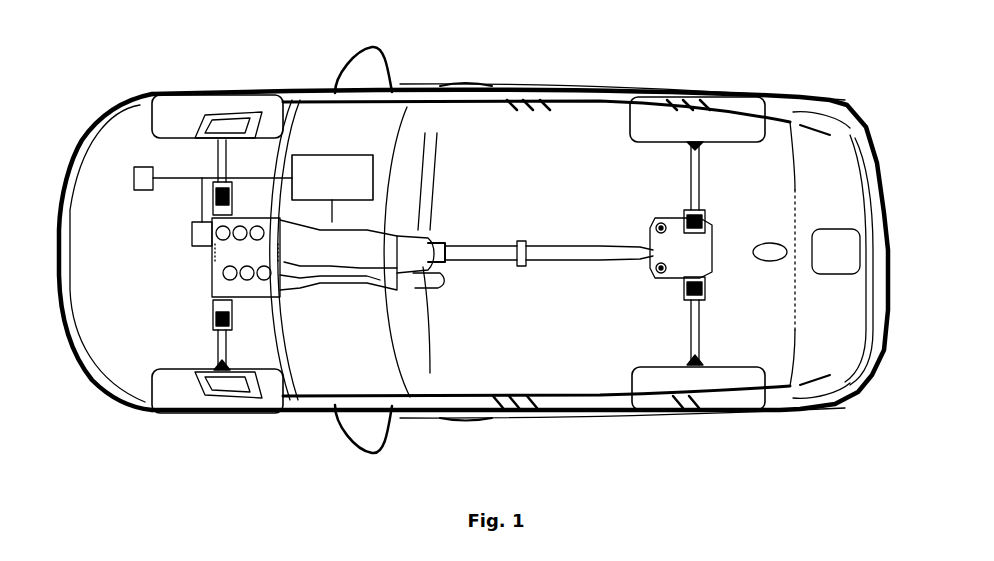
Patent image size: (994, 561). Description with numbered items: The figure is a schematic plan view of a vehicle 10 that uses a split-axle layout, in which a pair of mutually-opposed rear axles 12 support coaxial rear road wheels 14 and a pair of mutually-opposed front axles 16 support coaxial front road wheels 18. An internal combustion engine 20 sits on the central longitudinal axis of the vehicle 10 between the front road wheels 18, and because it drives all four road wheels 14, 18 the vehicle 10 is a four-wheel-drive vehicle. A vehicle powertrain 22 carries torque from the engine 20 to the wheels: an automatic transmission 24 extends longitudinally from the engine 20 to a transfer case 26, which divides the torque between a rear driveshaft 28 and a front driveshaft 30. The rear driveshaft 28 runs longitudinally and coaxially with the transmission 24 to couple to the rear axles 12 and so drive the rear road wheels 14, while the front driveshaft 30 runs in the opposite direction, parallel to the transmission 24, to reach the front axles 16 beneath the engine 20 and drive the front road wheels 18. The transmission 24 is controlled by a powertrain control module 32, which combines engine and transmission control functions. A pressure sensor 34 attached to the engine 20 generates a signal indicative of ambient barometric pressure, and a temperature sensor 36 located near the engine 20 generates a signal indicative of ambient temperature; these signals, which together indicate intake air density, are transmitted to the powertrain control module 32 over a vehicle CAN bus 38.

The vehicle 10 is at (233, 458).
The rear axles 12 is at (697, 193).
The rear road wheels 14 is at (750, 93).
The front axles 16 is at (220, 155).
The front road wheels 18 is at (160, 93).
The internal combustion engine 20 is at (215, 261).
The vehicle powertrain 22 is at (387, 221).
The automatic transmission 24 is at (298, 263).
The transfer case 26 is at (420, 263).
The rear driveshaft 28 is at (556, 262).
The front driveshaft 30 is at (332, 287).
The powertrain control module 32 is at (317, 155).
The pressure sensor 34 is at (192, 235).
The temperature sensor 36 is at (133, 178).
The vehicle CAN bus 38 is at (197, 203).